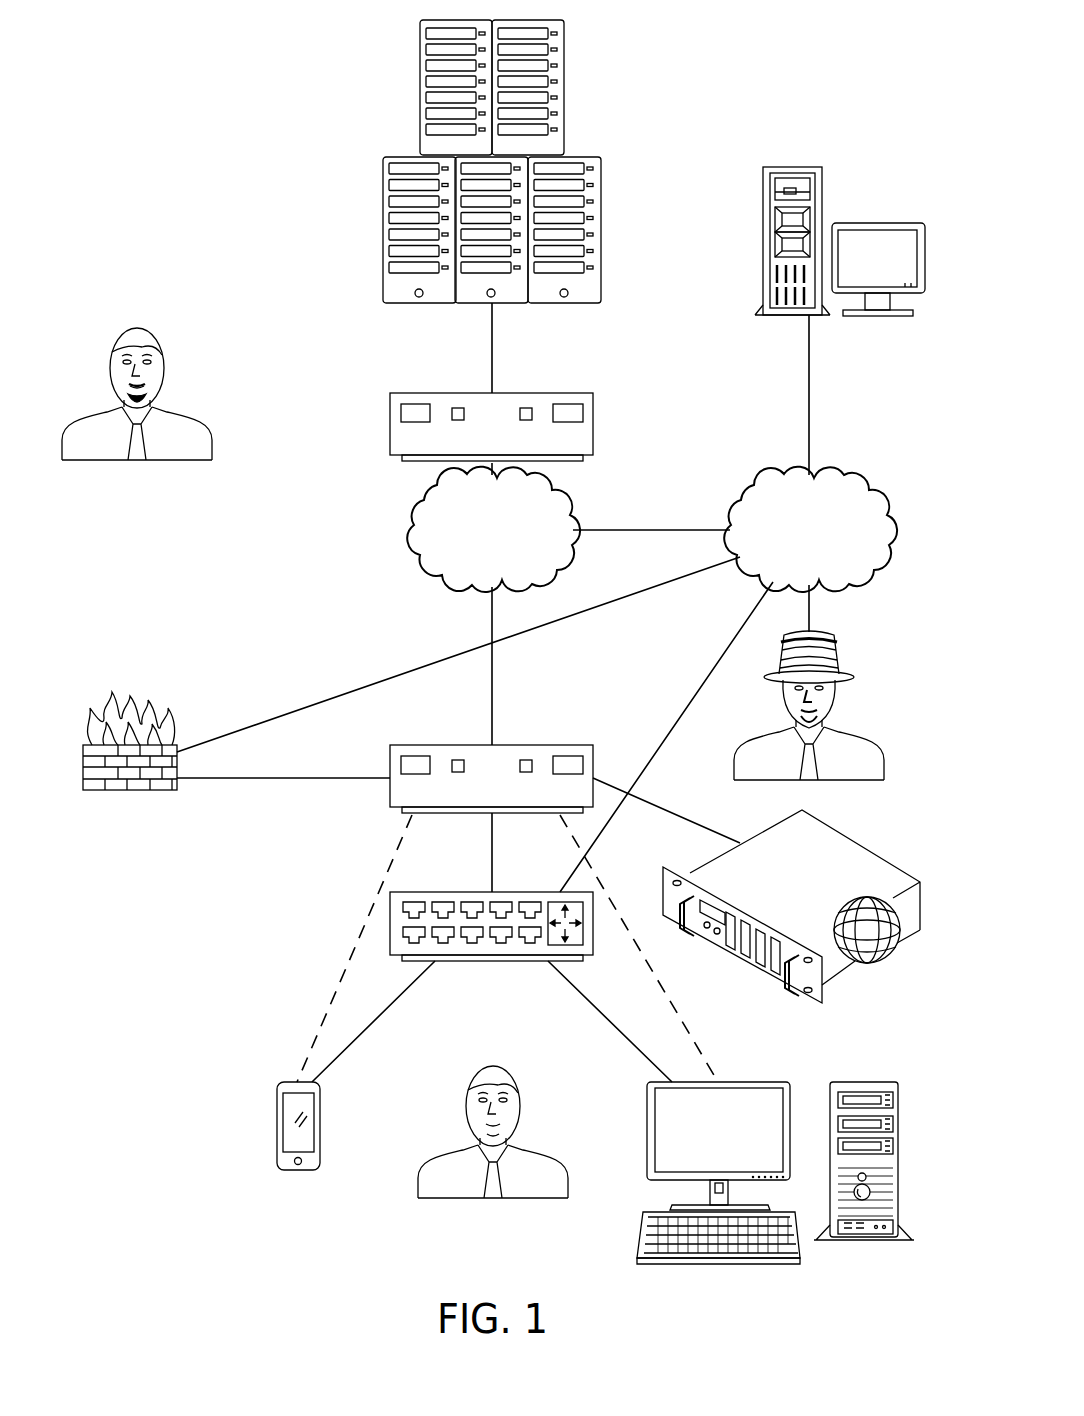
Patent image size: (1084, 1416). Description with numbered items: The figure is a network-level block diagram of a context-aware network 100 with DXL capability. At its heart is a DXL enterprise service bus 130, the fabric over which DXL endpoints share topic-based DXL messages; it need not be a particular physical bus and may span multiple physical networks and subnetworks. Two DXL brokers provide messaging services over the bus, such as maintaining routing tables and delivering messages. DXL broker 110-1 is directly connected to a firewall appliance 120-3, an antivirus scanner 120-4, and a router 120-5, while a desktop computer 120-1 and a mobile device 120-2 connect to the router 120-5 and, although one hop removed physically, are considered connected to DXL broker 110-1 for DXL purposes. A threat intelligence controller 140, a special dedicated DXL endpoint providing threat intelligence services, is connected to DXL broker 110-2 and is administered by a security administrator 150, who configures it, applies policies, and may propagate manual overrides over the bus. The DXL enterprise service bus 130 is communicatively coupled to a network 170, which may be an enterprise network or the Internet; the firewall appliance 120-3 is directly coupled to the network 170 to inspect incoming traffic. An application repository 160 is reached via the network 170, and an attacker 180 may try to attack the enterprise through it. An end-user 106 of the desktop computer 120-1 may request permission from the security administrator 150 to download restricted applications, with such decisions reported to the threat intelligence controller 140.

The context-aware network 100 is at (758, 94).
The user 106 is at (490, 1200).
The DXL broker 110-1 is at (390, 787).
The DXL broker 110-2 is at (437, 392).
The desktop computer 120-1 is at (862, 1242).
The mobile device 120-2 is at (277, 1127).
The firewall appliance 120-3 is at (118, 792).
The antivirus scanner 120-4 is at (840, 972).
The router 120-5 is at (480, 961).
The DXL enterprise service bus 130 is at (430, 565).
The threat intelligence controller 140 is at (414, 128).
The security administrator 150 is at (137, 462).
The application repository 160 is at (878, 222).
The network 170 is at (843, 477).
The attacker 180 is at (837, 695).